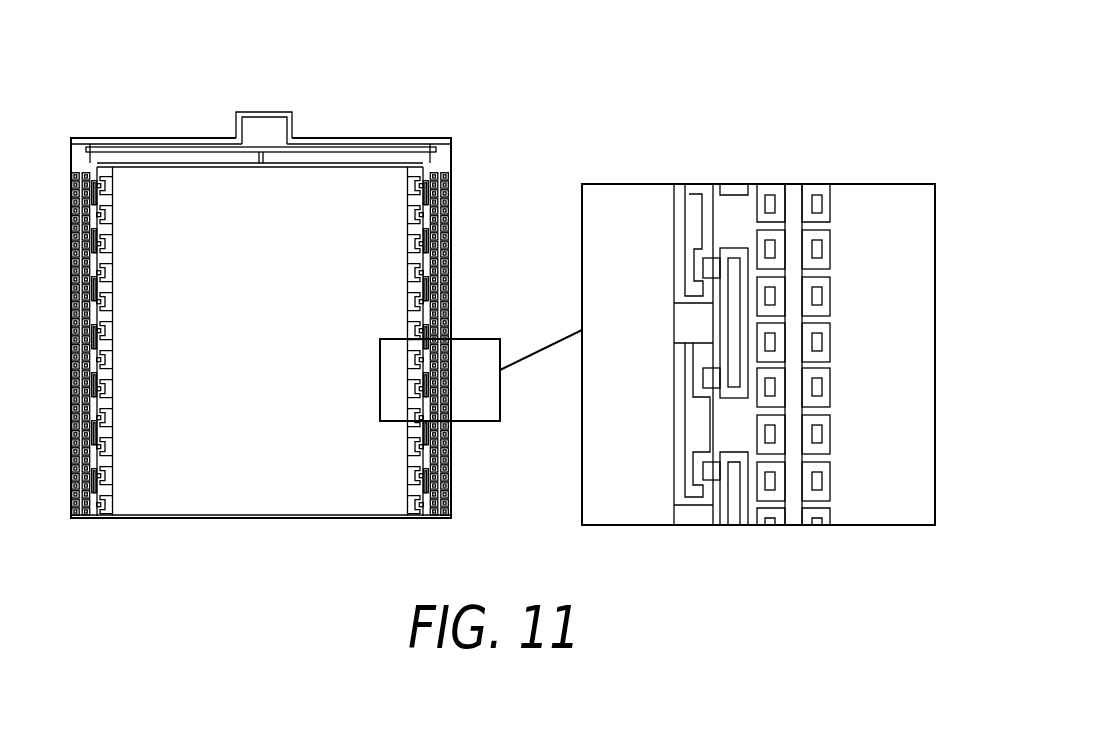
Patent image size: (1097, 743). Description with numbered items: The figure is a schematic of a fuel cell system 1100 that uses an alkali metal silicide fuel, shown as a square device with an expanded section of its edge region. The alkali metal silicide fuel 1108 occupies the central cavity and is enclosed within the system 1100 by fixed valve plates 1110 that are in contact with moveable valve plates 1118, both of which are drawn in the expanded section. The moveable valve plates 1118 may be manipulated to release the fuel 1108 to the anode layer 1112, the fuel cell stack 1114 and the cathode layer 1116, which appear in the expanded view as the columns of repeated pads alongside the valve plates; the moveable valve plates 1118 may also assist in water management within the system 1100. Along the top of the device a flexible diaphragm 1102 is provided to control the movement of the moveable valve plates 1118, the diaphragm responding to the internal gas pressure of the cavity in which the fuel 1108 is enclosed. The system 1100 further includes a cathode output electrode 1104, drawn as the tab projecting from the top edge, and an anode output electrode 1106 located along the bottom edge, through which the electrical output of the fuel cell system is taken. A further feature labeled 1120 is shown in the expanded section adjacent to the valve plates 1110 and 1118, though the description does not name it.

The fuel cell system 1100 is at (380, 63).
The flexible diaphragm 1102 is at (158, 149).
The cathode output electrode 1104 is at (259, 113).
The anode output electrode 1106 is at (168, 519).
The alkali metal silicide fuel 1108 is at (257, 505).
The fixed valve plates 1110 is at (689, 196).
The anode layer 1112 is at (770, 200).
The fuel cell stack 1114 is at (797, 186).
The cathode layer 1116 is at (817, 297).
The moveable valve plates 1118 is at (736, 514).
The connection portion 1120 is at (706, 472).